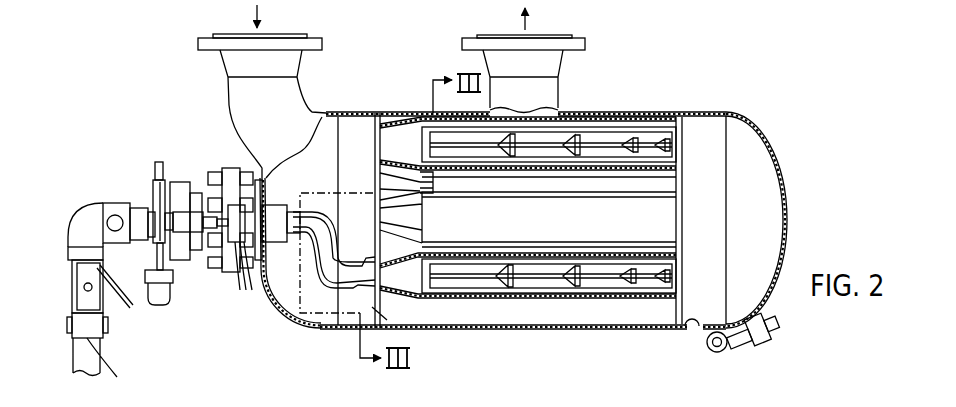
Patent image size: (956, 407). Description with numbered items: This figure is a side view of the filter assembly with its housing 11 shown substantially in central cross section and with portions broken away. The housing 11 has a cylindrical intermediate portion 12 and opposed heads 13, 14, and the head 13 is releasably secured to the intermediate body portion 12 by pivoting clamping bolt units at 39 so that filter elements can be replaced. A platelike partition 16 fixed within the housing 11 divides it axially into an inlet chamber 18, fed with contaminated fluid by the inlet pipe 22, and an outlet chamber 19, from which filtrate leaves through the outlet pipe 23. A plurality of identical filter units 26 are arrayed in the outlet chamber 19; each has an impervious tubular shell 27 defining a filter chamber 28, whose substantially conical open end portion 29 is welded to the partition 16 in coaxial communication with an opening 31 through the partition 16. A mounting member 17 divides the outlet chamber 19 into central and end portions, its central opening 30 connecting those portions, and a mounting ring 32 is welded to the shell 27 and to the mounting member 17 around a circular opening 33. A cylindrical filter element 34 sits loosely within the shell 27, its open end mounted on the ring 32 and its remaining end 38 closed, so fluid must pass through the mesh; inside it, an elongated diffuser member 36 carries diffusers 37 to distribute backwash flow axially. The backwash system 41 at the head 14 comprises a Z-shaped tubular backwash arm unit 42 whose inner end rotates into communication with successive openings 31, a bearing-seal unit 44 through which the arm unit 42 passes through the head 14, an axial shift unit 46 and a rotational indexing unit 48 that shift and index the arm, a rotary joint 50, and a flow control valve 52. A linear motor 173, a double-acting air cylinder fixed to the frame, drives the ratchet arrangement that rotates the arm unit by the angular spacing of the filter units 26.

The housing 11 is at (503, 333).
The cylindrical intermediate portion 12 is at (543, 330).
The head 13 is at (787, 242).
The head 14 is at (270, 300).
The partition 16 is at (382, 310).
The mounting member 17 is at (692, 330).
The chamber 18 is at (347, 322).
The chamber 19 is at (763, 207).
The inlet pipe 22 is at (232, 63).
The outlet pipe 23 is at (565, 58).
The filter unit 26 is at (422, 110).
The tubular shell 27 is at (617, 115).
The filter chamber 28 is at (660, 113).
The open end portion 29 is at (398, 163).
The central opening 30 is at (683, 245).
The opening 31 is at (374, 147).
The mounting ring 32 is at (680, 167).
The circular opening 33 is at (683, 138).
The filter element 34 is at (572, 117).
The diffuser member 36 is at (557, 150).
The diffusers 37 is at (507, 152).
The closed end 38 is at (426, 156).
The pivoting clamping bolt units 39 is at (744, 350).
The backwash system 41 is at (212, 170).
The backwash arm unit 42 is at (340, 207).
The bearing-seal unit 44 is at (230, 167).
The axial shift unit 46 is at (180, 182).
The rotational indexing unit 48 is at (155, 173).
The rotary joint 50 is at (125, 200).
The flow control valve 52 is at (80, 290).
The linear motor 173 is at (165, 292).